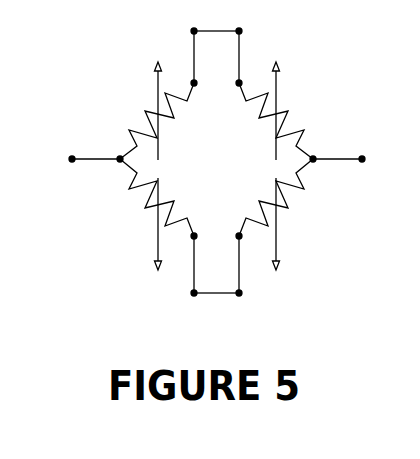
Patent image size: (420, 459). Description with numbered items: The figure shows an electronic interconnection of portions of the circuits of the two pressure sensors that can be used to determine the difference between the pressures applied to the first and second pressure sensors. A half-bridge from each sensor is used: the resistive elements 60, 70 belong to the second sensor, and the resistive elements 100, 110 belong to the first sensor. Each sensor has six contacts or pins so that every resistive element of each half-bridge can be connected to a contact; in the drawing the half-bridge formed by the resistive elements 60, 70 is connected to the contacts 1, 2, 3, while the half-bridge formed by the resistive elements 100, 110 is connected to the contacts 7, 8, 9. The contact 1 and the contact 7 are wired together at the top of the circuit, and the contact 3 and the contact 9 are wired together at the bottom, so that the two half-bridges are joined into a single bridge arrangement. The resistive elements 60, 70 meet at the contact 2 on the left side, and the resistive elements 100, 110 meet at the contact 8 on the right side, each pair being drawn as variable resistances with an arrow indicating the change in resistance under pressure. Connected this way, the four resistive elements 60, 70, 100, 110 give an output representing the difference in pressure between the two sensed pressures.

The contact 1 is at (202, 43).
The contact 2 is at (87, 160).
The contact 3 is at (202, 281).
The contact 7 is at (229, 43).
The contact 8 is at (345, 160).
The contact 9 is at (232, 280).
The resistive element 60 is at (140, 119).
The resistive element 70 is at (133, 206).
The resistive element 100 is at (296, 120).
The resistive element 110 is at (301, 210).